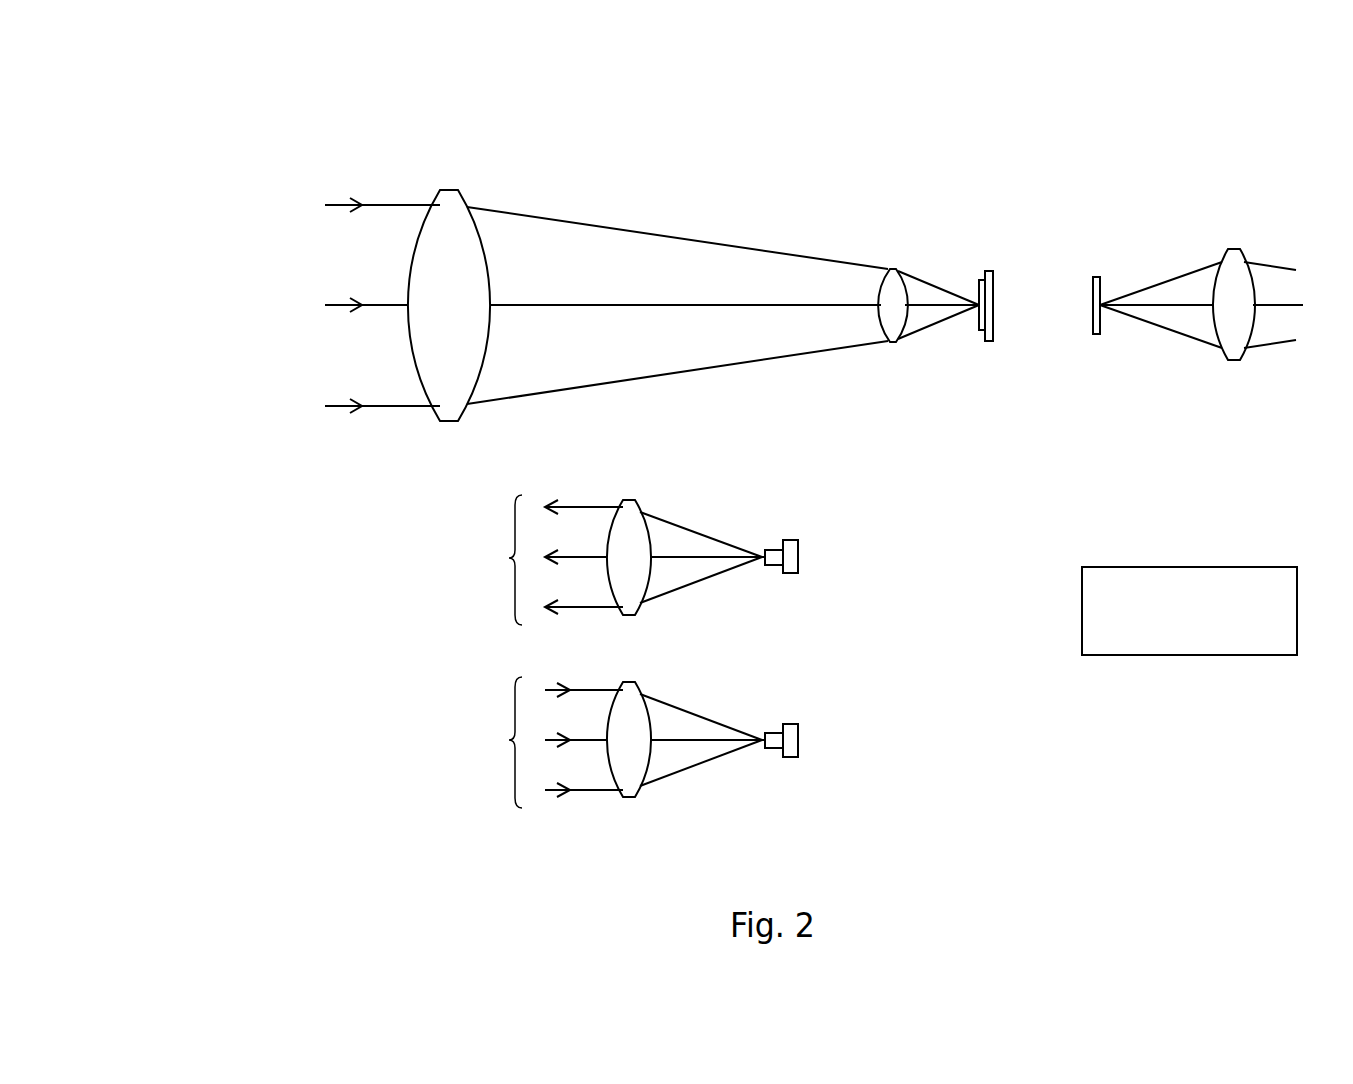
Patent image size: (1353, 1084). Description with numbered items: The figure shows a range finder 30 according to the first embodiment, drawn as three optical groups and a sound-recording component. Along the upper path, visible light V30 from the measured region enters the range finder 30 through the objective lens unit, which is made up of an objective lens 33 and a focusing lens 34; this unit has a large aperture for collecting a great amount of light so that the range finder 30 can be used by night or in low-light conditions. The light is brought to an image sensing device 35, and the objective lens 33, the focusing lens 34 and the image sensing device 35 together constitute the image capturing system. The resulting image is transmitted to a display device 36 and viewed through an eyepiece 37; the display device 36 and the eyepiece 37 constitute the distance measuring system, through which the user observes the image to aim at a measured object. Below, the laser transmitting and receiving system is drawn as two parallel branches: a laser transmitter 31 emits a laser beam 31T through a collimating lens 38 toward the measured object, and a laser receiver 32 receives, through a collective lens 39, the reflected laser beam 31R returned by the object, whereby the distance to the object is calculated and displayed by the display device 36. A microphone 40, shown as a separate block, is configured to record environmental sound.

The range finder 30 is at (231, 87).
The visible light V30 is at (336, 305).
The laser transmitter 31 is at (798, 570).
The laser beam 31T is at (530, 560).
The reflected laser beam 31R is at (530, 742).
The laser receiver 32 is at (798, 752).
The objective lens 33 is at (444, 188).
The focusing lens 34 is at (895, 268).
The image sensing device 35 is at (990, 271).
The display device 36 is at (1097, 277).
The eyepiece 37 is at (1232, 249).
The collimating lens 38 is at (633, 615).
The collective lens 39 is at (633, 797).
The microphone 40 is at (1187, 567).